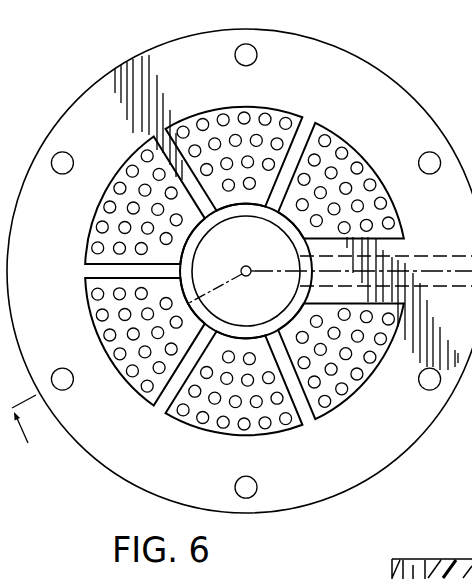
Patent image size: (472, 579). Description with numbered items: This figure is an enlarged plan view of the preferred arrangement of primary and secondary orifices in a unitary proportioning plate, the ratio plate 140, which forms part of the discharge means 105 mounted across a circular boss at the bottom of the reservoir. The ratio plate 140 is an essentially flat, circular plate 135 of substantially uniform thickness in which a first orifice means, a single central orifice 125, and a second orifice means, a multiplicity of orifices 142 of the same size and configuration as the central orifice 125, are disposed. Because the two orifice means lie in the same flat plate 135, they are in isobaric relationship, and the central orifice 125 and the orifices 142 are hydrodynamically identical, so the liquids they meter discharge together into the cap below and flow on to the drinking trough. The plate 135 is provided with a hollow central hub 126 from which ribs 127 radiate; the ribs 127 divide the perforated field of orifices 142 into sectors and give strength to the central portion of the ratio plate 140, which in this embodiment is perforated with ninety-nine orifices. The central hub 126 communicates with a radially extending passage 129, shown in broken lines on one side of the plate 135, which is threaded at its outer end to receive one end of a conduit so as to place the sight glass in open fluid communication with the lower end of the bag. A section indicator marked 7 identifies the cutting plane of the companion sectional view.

The circular plate 135 is at (122, 154).
The ribs 127 is at (294, 143).
The orifices 142 is at (222, 118).
The central hub 126 is at (278, 232).
The central orifice 125 is at (246, 277).
The radially extending passage 129 is at (418, 288).
The ratio plate 140 is at (106, 74).
The section line 7 is at (31, 429).
The discharge means 105 is at (471, 545).